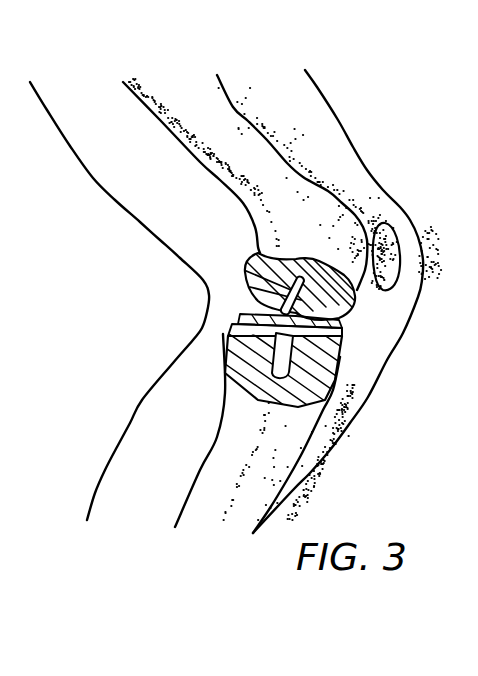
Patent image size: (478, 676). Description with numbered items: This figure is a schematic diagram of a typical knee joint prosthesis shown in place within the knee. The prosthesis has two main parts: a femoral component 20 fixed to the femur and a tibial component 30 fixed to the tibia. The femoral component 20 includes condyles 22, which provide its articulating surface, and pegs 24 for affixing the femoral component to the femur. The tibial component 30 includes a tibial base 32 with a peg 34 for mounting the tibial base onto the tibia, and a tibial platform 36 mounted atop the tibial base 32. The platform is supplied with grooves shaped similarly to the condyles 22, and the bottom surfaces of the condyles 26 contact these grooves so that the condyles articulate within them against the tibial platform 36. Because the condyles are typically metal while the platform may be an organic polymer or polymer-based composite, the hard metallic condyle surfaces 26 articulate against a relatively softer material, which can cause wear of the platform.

The femoral component 20 is at (373, 308).
The condyles 22 is at (243, 302).
The pegs 24 is at (258, 254).
The bottom surfaces of the condyles 26 is at (343, 340).
The tibial component 30 is at (355, 354).
The tibial base 32 is at (230, 337).
The peg 34 is at (228, 373).
The tibial platform 36 is at (340, 342).